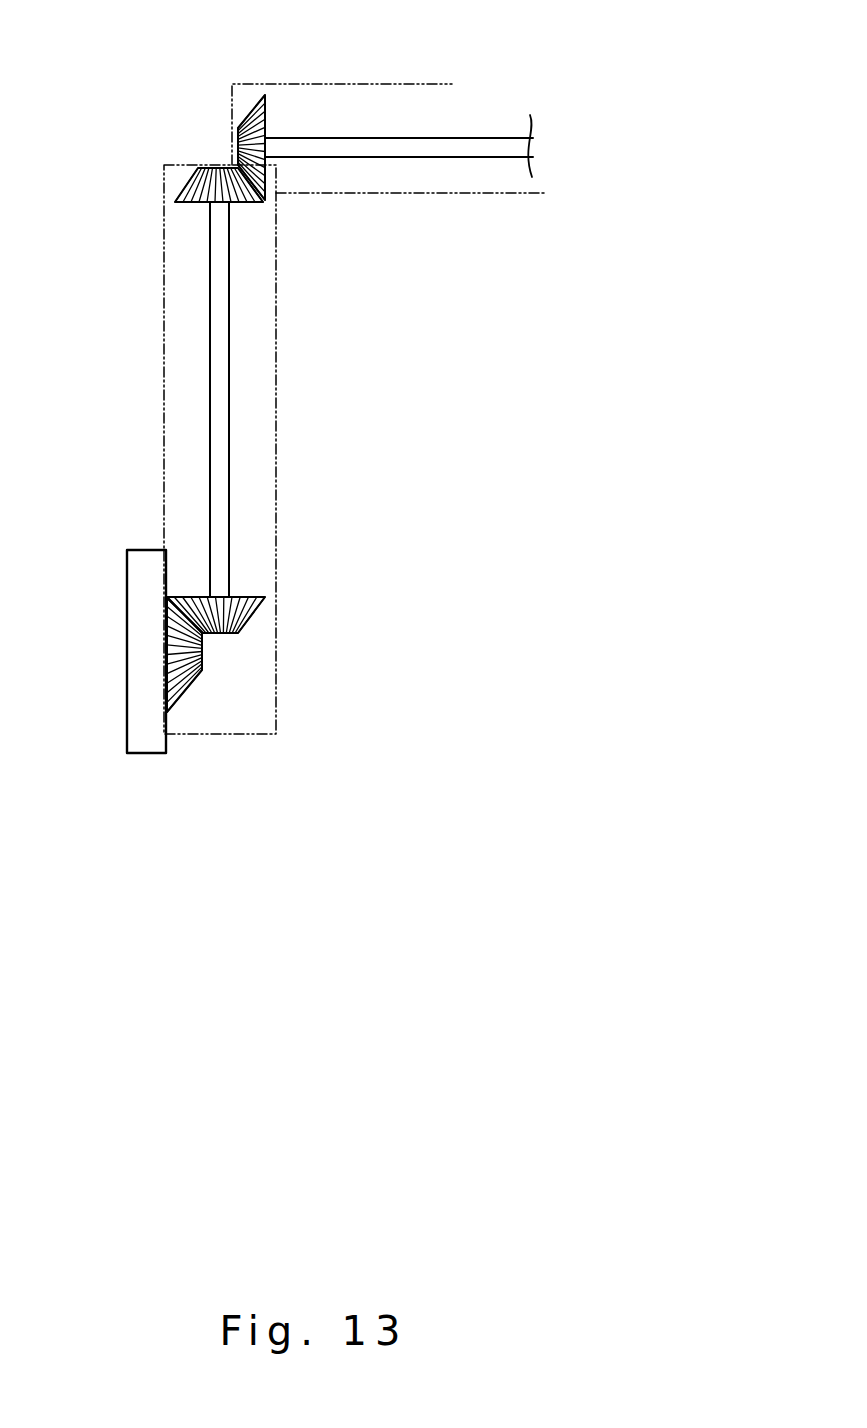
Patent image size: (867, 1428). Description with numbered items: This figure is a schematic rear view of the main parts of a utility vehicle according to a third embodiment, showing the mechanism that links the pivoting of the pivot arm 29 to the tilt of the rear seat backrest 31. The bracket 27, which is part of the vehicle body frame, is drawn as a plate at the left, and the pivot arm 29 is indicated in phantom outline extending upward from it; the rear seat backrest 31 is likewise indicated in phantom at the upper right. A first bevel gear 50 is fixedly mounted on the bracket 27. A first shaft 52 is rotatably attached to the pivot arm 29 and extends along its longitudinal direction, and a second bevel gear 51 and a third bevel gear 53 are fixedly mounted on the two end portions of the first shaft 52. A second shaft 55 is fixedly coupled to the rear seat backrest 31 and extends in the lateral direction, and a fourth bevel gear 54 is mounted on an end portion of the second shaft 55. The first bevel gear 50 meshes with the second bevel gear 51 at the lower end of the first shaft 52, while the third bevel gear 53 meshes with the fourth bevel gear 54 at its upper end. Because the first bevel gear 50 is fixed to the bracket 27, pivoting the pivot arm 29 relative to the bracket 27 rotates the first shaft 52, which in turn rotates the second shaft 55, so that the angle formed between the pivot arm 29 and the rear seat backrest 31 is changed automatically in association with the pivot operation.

The bracket 27 is at (127, 682).
The pivot arm 29 is at (276, 373).
The rear seat backrest 31 is at (450, 195).
The first bevel gear 50 is at (187, 688).
The second bevel gear 51 is at (250, 618).
The first shaft 52 is at (221, 459).
The third bevel gear 53 is at (187, 183).
The fourth bevel gear 54 is at (253, 107).
The second shaft 55 is at (418, 138).